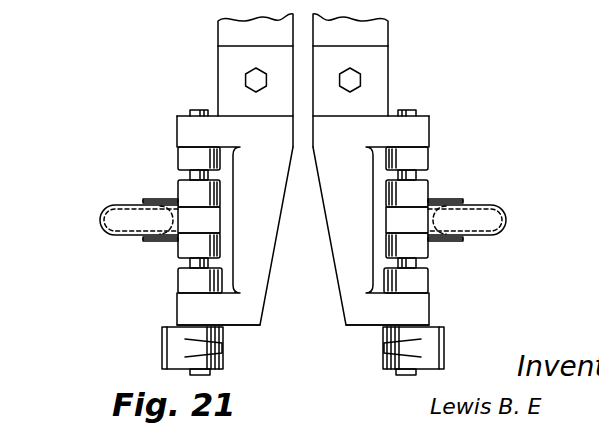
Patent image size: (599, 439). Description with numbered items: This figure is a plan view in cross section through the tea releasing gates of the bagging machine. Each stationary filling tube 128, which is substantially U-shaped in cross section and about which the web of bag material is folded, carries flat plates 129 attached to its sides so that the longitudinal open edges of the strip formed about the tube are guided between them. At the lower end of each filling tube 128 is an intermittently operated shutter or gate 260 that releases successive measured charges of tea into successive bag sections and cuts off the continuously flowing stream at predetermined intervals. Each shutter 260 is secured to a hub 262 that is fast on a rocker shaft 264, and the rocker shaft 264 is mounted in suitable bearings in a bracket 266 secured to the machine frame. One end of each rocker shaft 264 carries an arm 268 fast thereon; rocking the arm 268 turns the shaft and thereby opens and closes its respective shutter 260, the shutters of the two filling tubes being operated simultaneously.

The filling tube 128 is at (100, 218).
The flat plates 129 is at (162, 195).
The shutter 260 is at (207, 220).
The hub 262 is at (215, 240).
The rocker shaft 264 is at (197, 110).
The bracket 266 is at (250, 317).
The arm 268 is at (227, 348).